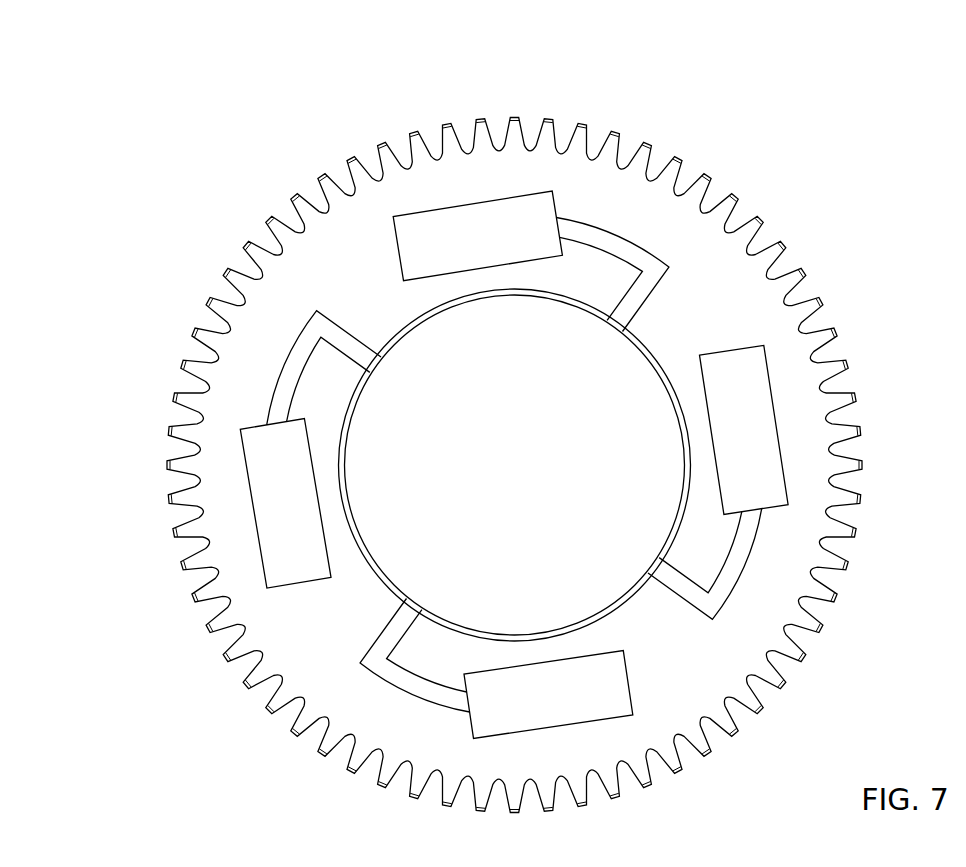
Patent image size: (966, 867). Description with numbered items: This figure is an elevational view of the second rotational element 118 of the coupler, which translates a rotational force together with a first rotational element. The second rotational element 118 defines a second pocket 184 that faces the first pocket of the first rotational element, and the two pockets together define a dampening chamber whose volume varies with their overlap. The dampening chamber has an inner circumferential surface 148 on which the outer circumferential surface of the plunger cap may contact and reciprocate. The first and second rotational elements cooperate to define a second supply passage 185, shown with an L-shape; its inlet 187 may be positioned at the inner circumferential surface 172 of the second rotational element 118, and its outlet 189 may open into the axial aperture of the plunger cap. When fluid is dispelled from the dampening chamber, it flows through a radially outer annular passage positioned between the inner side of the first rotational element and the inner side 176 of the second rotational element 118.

The second rotational element 118 is at (484, 120).
The inner side of the second rotational element 176 is at (308, 265).
The inner circumferential surface 172 is at (425, 317).
The inner circumferential surface of the dampening chamber 148 is at (456, 253).
The second supply passage 185 is at (641, 236).
The inlet 187 is at (618, 342).
The outlet 189 is at (556, 213).
The second pocket 184 is at (445, 209).